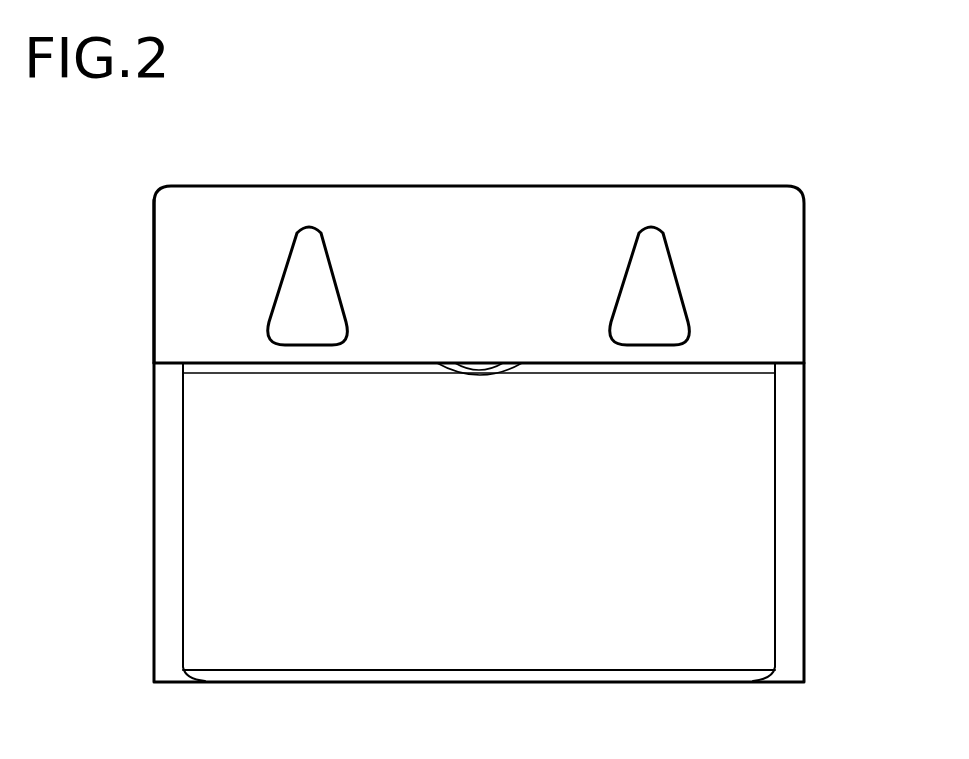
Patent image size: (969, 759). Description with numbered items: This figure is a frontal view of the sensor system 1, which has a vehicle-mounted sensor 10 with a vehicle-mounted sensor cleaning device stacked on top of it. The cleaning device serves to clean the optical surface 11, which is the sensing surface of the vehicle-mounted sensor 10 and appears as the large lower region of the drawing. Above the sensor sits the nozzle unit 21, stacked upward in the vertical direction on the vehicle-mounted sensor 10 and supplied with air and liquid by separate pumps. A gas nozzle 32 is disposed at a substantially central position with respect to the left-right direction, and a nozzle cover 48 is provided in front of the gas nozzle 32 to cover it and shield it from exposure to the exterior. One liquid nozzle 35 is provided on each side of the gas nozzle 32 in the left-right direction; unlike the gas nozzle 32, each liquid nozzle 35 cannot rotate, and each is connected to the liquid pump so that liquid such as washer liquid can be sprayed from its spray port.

The sensor system 1 is at (153, 163).
The vehicle-mounted sensor 10 is at (806, 465).
The optical surface 11 is at (755, 603).
The nozzle unit 21 is at (806, 236).
The gas nozzle 32 is at (497, 360).
The liquid nozzle 35 is at (340, 268).
The nozzle cover 48 is at (156, 272).